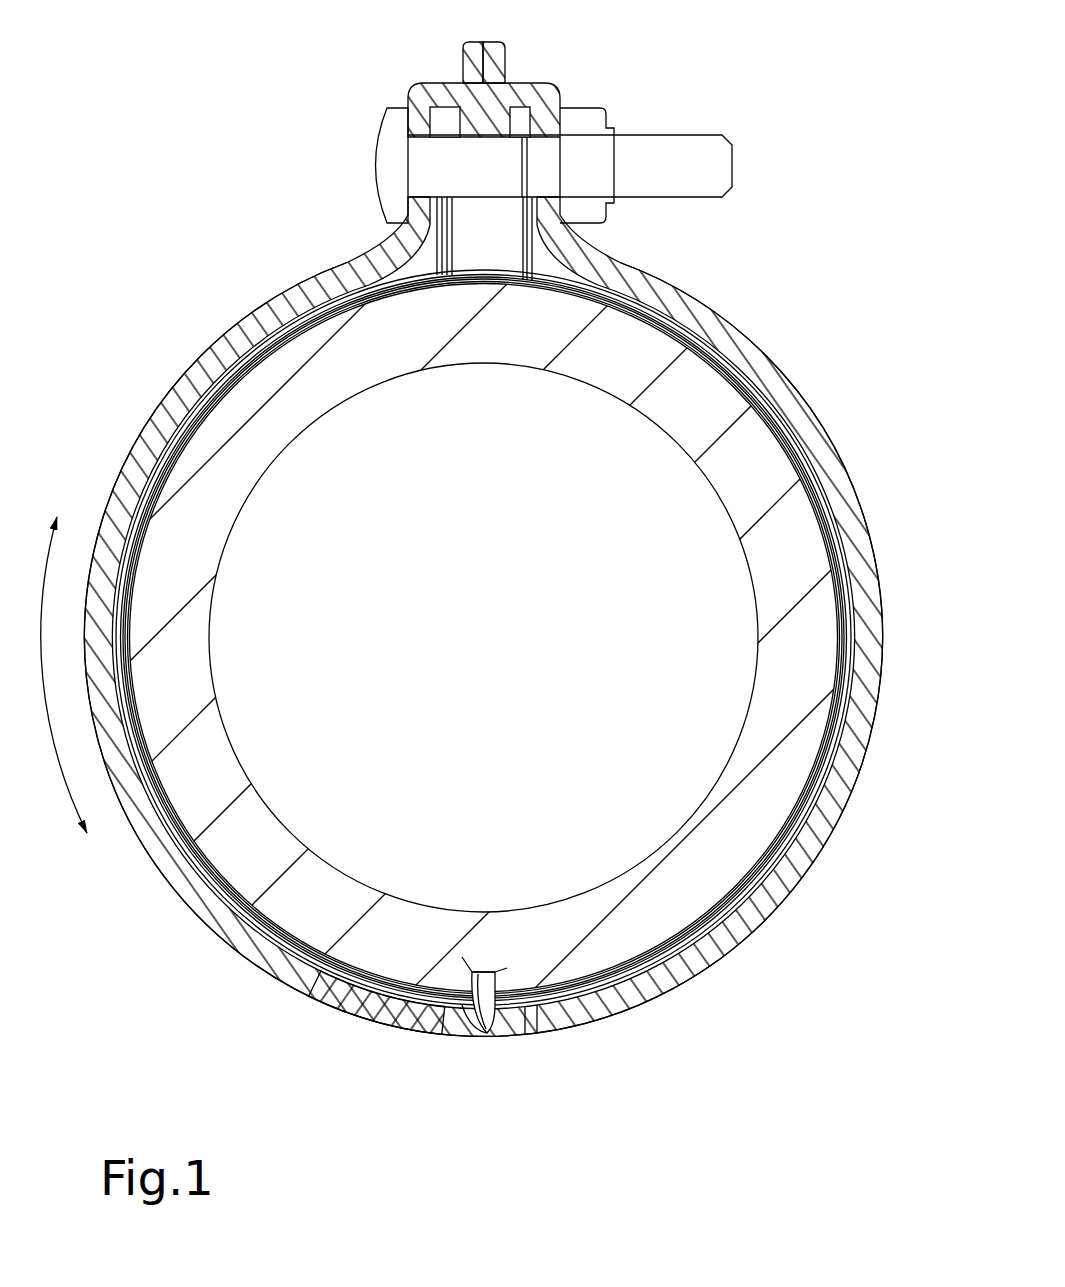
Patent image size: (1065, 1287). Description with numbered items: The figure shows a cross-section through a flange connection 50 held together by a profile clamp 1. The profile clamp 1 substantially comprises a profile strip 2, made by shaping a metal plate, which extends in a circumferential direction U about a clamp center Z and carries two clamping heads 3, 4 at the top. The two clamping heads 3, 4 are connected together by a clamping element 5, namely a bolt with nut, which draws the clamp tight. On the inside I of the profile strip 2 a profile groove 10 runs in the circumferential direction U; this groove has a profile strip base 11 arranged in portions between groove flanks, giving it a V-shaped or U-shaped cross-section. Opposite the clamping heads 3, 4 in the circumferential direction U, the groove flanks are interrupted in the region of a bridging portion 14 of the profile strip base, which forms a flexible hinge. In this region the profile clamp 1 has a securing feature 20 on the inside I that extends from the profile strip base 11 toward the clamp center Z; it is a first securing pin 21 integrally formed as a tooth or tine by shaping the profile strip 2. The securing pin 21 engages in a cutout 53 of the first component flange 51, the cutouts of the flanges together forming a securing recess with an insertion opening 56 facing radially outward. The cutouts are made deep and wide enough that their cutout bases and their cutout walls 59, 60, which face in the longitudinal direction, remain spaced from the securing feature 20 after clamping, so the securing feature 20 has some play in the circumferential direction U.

The profile clamp 1 is at (790, 372).
The profile strip 2 is at (822, 465).
The clamping head 3 is at (523, 82).
The clamping head 4 is at (432, 82).
The clamping element 5 is at (405, 160).
The profile groove 10 is at (856, 612).
The profile strip base 11 is at (862, 644).
The bridging portion 14 is at (560, 1027).
The securing feature 20 is at (492, 1038).
The first securing pin 21 is at (495, 972).
The flange connection 50 is at (205, 88).
The first component flange 51 is at (222, 436).
The cutout 53 is at (462, 957).
The insertion opening 56 is at (460, 1005).
The cutout wall 59 is at (507, 967).
The cutout wall 60 is at (453, 985).
The inside I is at (483, 624).
The clamp center Z is at (487, 588).
The circumferential direction U is at (54, 675).